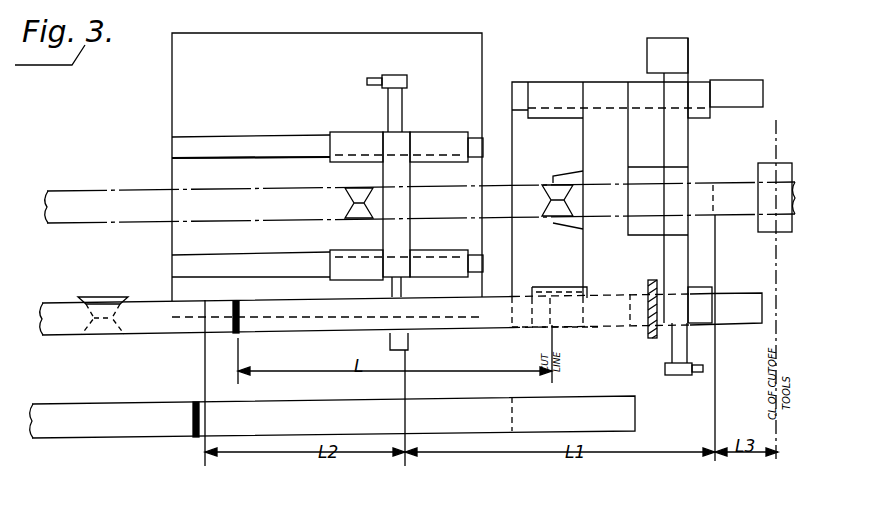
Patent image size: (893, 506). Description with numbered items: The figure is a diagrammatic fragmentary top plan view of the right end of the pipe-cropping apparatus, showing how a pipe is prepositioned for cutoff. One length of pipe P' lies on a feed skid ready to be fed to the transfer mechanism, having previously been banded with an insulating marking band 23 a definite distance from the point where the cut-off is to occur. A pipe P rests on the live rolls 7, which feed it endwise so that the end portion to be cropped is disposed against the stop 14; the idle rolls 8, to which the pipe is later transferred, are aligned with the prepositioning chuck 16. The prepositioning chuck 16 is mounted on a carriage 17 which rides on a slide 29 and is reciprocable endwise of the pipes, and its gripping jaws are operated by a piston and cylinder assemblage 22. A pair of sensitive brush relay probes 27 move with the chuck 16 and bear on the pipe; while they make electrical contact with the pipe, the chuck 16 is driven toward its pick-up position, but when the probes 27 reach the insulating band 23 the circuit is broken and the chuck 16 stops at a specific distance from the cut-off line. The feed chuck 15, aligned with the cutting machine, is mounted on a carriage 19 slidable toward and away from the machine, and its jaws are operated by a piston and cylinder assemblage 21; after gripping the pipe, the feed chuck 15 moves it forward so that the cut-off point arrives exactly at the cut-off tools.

The live rolls 7 is at (95, 300).
The idle rolls 8 is at (345, 190).
The stop 14 is at (652, 338).
The feed chuck 15 is at (604, 92).
The prepositioning chuck 16 is at (398, 148).
The carriage 17 is at (447, 140).
The carriage 19 is at (547, 92).
The piston and cylinder assemblage 21 is at (668, 360).
The piston and cylinder assemblage 22 is at (398, 80).
The marking band 23 is at (233, 336).
The relay probes 27 is at (404, 297).
The slide 29 is at (205, 143).
The pipe P is at (401, 336).
The pipe P' is at (332, 435).